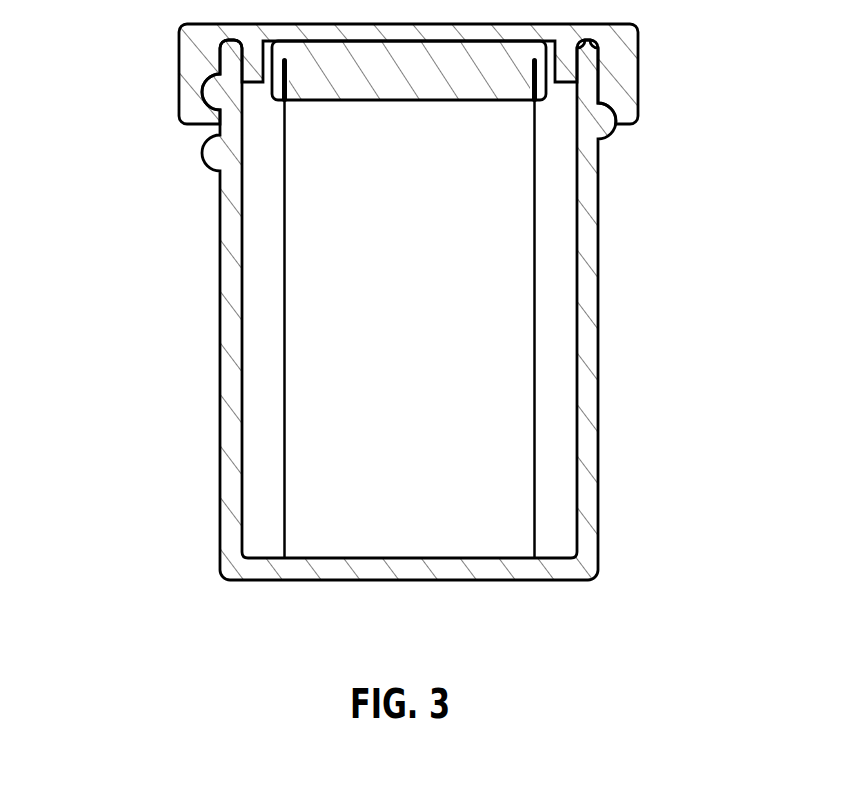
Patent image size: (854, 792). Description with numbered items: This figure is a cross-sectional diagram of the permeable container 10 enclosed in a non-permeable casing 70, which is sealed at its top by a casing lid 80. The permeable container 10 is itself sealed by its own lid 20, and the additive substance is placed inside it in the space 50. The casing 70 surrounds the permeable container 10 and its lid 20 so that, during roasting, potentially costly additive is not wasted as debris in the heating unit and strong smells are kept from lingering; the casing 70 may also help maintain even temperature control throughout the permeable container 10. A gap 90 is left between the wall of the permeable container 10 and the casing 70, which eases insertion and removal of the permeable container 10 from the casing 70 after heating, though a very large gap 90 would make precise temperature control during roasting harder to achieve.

The permeable container 10 is at (283, 313).
The lid 20 is at (447, 102).
The space 50 is at (425, 527).
The casing 70 is at (599, 188).
The casing lid 80 is at (177, 78).
The gap 90 is at (545, 527).